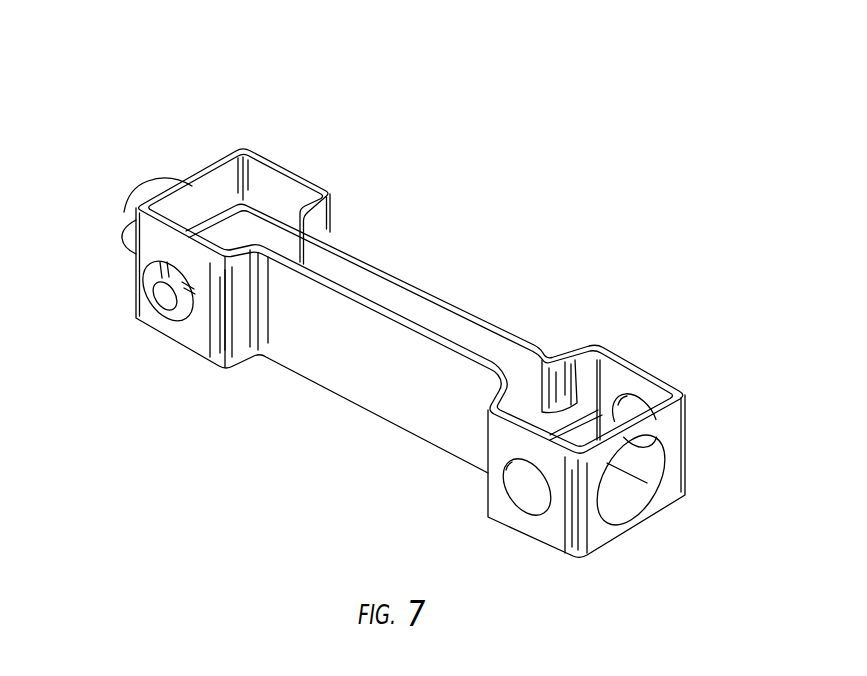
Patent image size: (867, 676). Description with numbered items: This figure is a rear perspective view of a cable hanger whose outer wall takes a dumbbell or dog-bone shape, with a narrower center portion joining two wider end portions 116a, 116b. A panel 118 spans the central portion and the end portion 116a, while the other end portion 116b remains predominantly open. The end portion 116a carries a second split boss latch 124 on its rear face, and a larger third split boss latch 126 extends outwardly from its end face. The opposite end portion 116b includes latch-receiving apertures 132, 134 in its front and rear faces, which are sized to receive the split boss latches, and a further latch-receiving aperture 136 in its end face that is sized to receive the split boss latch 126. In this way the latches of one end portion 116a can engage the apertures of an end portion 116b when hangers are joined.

The end portion 116a is at (277, 135).
The end portion 116b is at (718, 447).
The panel 118 is at (232, 233).
The second split boss latch 124 is at (160, 296).
The third split boss latch 126 is at (148, 185).
The latch-receiving aperture 132 is at (637, 403).
The latch-receiving aperture 134 is at (527, 492).
The latch-receiving aperture 136 is at (620, 497).